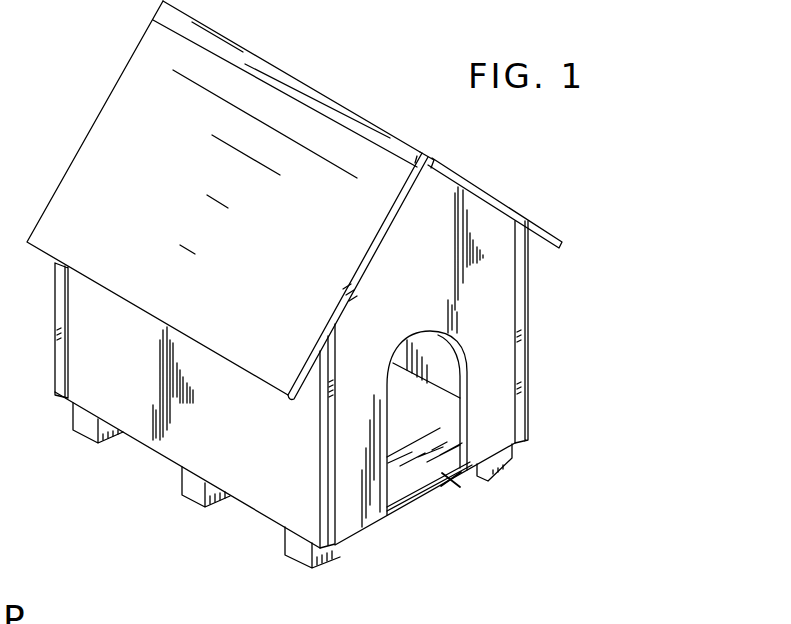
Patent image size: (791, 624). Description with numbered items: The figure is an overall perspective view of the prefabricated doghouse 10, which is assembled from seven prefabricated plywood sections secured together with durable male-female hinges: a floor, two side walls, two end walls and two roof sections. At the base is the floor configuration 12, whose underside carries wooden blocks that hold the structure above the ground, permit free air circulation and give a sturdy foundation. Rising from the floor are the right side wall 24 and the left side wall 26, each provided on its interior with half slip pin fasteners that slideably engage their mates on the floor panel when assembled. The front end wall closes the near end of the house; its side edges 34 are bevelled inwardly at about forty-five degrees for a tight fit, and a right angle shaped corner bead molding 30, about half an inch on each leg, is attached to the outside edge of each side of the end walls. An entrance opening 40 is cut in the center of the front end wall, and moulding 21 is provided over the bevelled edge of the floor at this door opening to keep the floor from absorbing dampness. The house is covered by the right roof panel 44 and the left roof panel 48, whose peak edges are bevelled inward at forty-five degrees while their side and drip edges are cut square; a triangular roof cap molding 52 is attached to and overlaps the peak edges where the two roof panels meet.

The prefabricated doghouse 10 is at (268, 46).
The floor configuration 12 is at (460, 483).
The moulding 21 is at (416, 497).
The right side wall 24 is at (529, 300).
The left side wall 26 is at (130, 438).
The corner bead molding 30 is at (529, 391).
The side edges 34 is at (350, 533).
The entrance opening 40 is at (425, 470).
The right roof panel 44 is at (508, 209).
The left roof panel 48 is at (147, 100).
The roof cap molding 52 is at (333, 98).